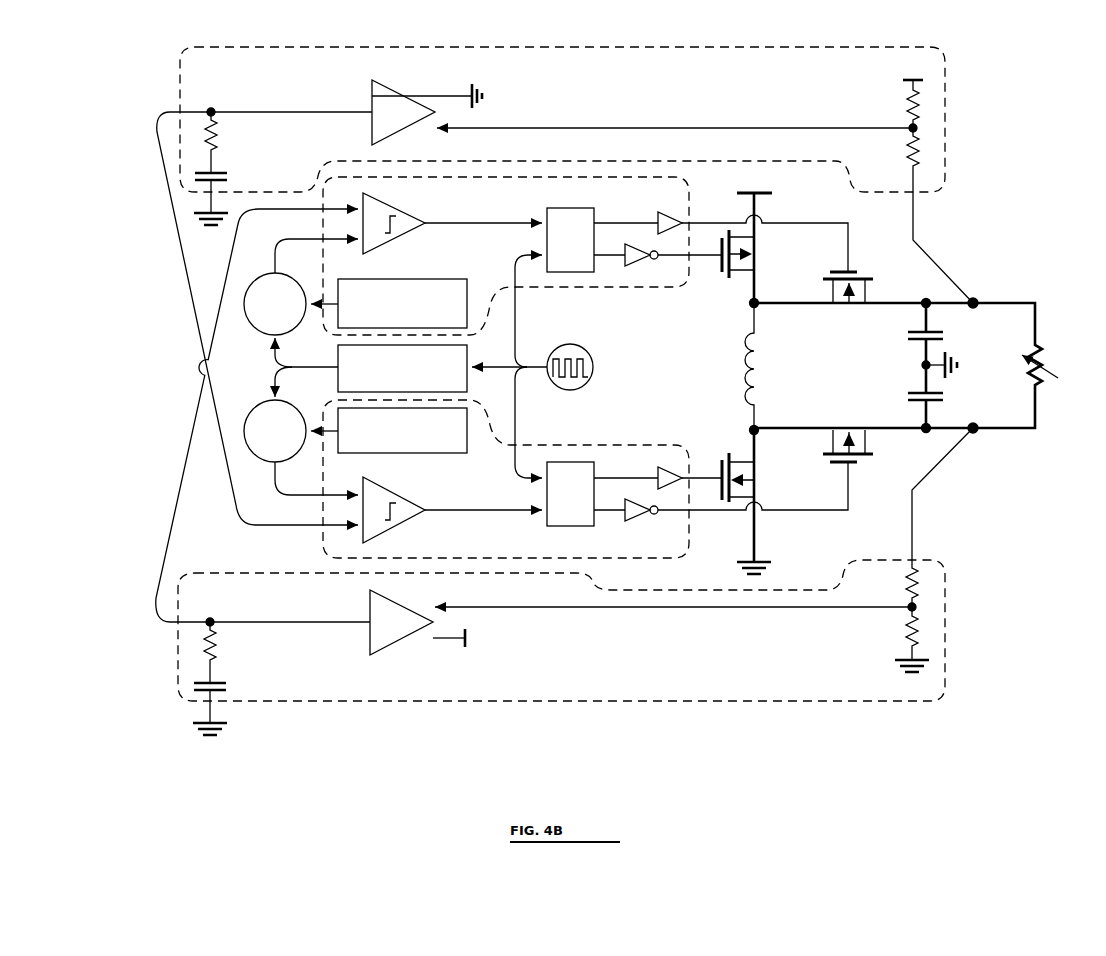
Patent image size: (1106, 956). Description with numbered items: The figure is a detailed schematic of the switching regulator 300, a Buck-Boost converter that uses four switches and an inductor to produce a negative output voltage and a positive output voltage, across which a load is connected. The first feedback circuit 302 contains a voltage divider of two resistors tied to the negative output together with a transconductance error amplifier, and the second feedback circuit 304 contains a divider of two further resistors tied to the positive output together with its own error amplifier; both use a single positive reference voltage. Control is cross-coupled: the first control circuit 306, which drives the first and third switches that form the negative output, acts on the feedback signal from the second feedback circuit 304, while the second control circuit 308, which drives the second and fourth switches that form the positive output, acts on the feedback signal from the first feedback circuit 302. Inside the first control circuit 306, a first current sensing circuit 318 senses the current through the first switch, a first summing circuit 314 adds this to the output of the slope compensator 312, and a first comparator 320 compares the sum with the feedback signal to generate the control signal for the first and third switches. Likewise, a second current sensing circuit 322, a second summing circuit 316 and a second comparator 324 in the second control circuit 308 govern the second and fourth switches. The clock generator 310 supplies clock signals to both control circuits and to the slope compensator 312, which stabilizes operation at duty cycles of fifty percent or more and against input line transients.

The switching regulator 300 is at (112, 60).
The first feedback circuit 302 is at (946, 135).
The second feedback circuit 304 is at (946, 638).
The first control circuit 306 is at (605, 290).
The second control circuit 308 is at (605, 444).
The clock generator 310 is at (592, 362).
The slope compensator 312 is at (338, 363).
The first summing circuit 314 is at (266, 332).
The second summing circuit 316 is at (264, 405).
The first current sensing circuit 318 is at (467, 279).
The first comparator 320 is at (403, 212).
The second current sensing circuit 322 is at (467, 453).
The second comparator 324 is at (397, 495).